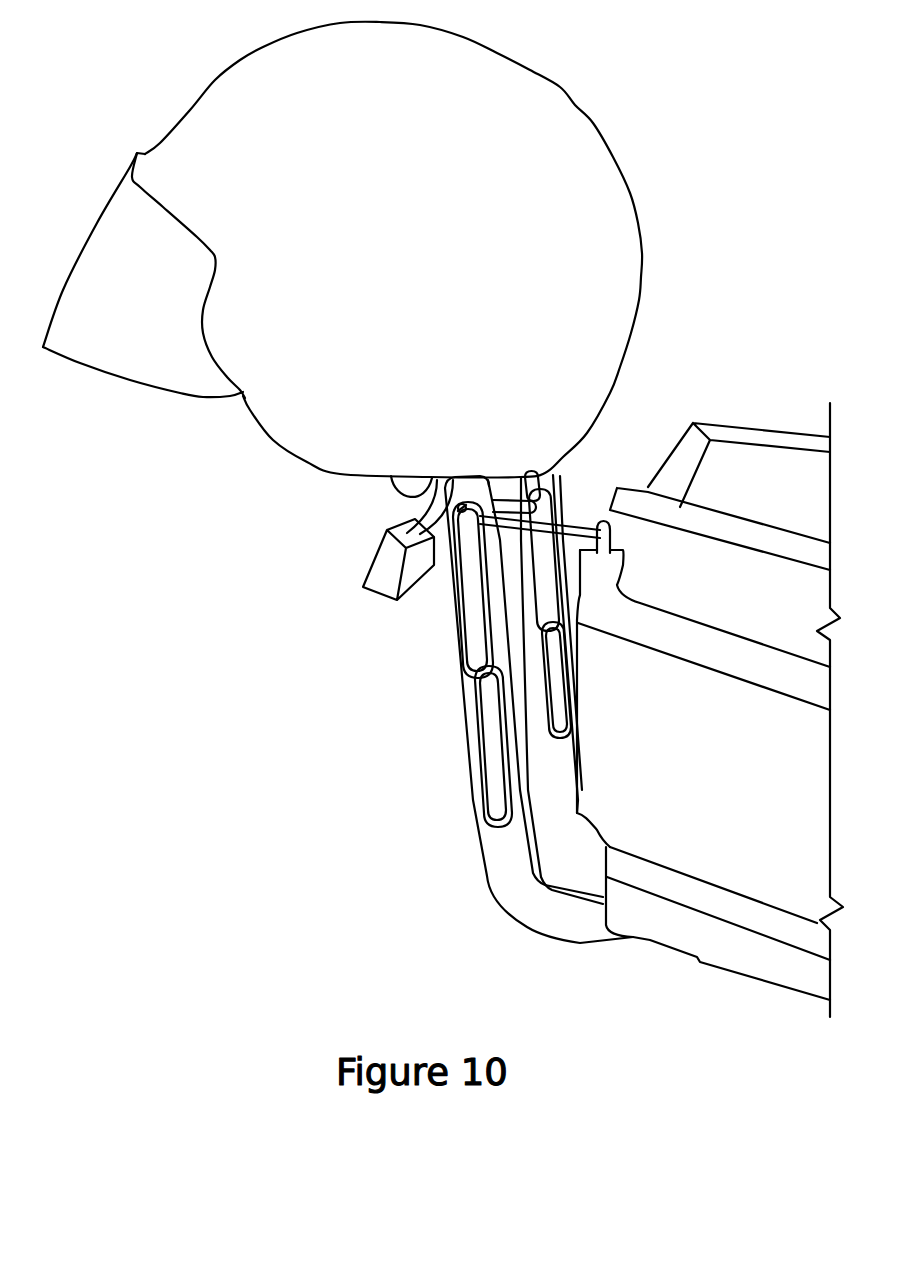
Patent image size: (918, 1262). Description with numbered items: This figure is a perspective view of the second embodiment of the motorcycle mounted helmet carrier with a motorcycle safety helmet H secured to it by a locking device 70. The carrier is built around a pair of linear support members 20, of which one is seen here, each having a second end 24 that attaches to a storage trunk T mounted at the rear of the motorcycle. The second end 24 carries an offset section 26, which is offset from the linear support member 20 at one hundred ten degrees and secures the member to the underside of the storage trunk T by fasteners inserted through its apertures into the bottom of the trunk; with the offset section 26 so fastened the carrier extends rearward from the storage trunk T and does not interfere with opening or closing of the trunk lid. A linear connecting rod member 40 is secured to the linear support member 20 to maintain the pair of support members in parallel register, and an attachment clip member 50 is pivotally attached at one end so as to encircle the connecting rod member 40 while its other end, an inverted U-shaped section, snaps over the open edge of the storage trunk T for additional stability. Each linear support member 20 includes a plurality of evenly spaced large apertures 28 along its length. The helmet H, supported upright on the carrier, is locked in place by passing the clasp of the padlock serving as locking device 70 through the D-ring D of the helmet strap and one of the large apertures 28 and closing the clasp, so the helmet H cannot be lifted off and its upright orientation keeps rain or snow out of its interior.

The motorcycle safety helmet H is at (540, 133).
The storage trunk T is at (773, 477).
The D-ring D is at (403, 483).
The linear support member 20 is at (547, 627).
The second end 24 is at (505, 863).
The offset section 26 is at (572, 770).
The large apertures 28 is at (547, 562).
The linear connecting rod member 40 is at (505, 487).
The attachment clip member 50 is at (565, 535).
The locking device 70 is at (380, 580).